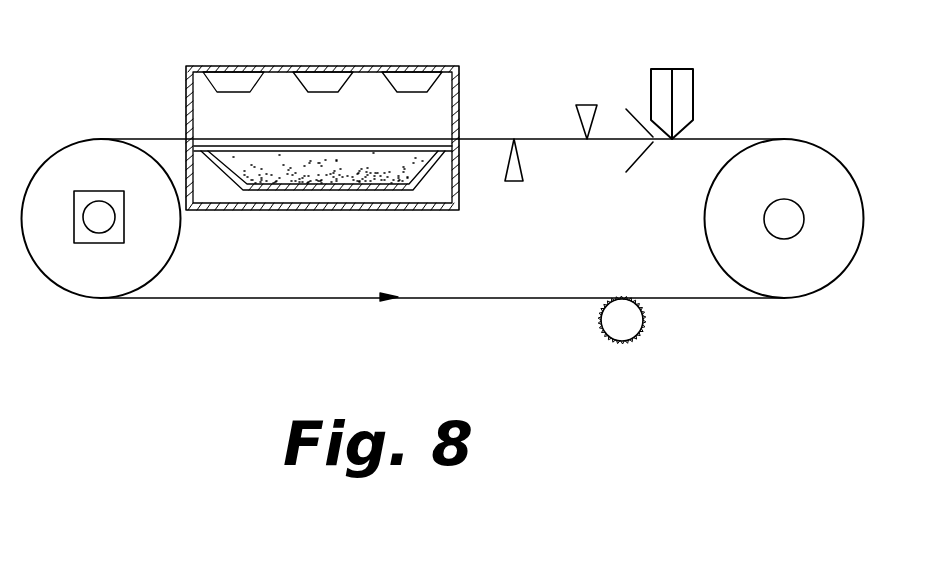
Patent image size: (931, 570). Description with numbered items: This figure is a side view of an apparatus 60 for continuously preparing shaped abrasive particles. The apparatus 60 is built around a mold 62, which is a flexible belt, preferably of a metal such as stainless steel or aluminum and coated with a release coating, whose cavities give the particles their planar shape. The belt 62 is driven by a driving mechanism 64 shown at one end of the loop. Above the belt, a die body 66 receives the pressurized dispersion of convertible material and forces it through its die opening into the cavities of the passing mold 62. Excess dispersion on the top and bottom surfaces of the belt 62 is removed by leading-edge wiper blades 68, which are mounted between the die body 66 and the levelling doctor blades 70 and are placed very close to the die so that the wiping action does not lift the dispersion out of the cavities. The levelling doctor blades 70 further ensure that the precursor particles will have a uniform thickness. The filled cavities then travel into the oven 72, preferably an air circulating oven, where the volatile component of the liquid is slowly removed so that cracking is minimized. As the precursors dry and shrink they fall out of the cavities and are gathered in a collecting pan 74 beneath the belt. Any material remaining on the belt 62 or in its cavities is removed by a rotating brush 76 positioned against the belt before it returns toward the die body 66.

The apparatus 60 is at (158, 392).
The mold 62 is at (275, 299).
The driving mechanism 64 is at (81, 244).
The die body 66 is at (693, 82).
The leading-edge wiper blades 68 is at (643, 157).
The levelling doctor blades 70 is at (514, 181).
The oven 72 is at (187, 93).
The collecting pan 74 is at (420, 183).
The brush 76 is at (620, 333).